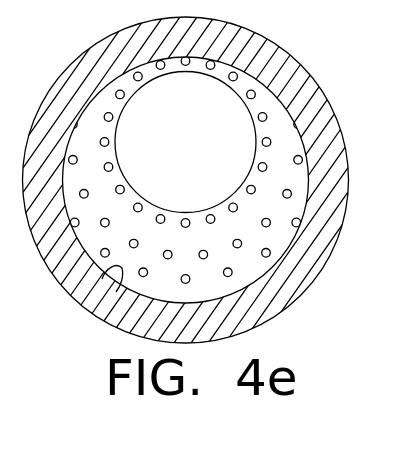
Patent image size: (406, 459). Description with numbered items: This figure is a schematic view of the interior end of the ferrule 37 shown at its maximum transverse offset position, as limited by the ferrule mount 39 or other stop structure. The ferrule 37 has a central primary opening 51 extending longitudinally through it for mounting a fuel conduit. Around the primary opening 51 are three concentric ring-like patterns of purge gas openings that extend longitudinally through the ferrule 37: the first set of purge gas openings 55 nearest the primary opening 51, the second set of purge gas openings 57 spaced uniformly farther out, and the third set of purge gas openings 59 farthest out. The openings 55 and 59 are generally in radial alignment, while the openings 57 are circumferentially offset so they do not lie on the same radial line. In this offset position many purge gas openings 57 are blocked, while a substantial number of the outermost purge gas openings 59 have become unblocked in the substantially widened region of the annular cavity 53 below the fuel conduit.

The ferrule 37 is at (243, 268).
The ferrule mount 39 is at (273, 318).
The primary opening 51 is at (248, 112).
The annular cavity 53 is at (95, 315).
The first set of purge gas openings 55 is at (261, 120).
The second set of purge gas openings 57 is at (286, 198).
The third set of purge gas openings 59 is at (266, 256).